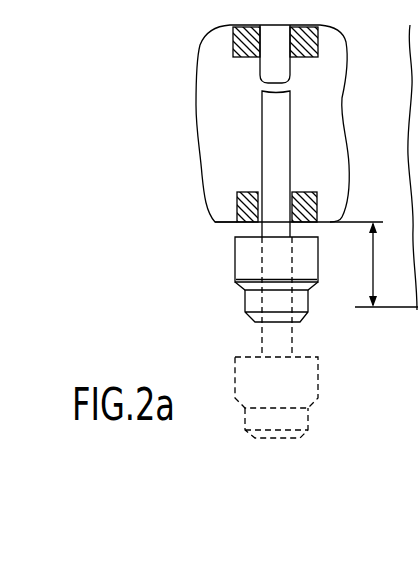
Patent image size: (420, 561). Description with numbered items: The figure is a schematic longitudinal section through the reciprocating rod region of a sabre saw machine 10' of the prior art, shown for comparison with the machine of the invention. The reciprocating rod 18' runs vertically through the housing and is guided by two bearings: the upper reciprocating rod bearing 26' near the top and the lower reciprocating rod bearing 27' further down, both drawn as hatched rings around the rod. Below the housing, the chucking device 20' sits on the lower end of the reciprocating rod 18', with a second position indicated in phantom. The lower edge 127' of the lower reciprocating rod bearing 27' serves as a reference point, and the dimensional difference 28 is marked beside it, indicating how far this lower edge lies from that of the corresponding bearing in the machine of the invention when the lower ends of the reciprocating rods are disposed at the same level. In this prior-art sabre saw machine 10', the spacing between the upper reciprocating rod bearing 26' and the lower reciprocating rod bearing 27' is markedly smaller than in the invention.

The sabre saw machine 10' is at (238, 167).
The upper reciprocating rod bearing 26' is at (225, 49).
The reciprocating rod 18' is at (217, 131).
The lower reciprocating rod bearing 27' is at (227, 215).
The lower edge of the lower reciprocating rod bearing 127' is at (187, 253).
The chucking device 20' is at (223, 337).
The dimensional difference 28 is at (371, 268).